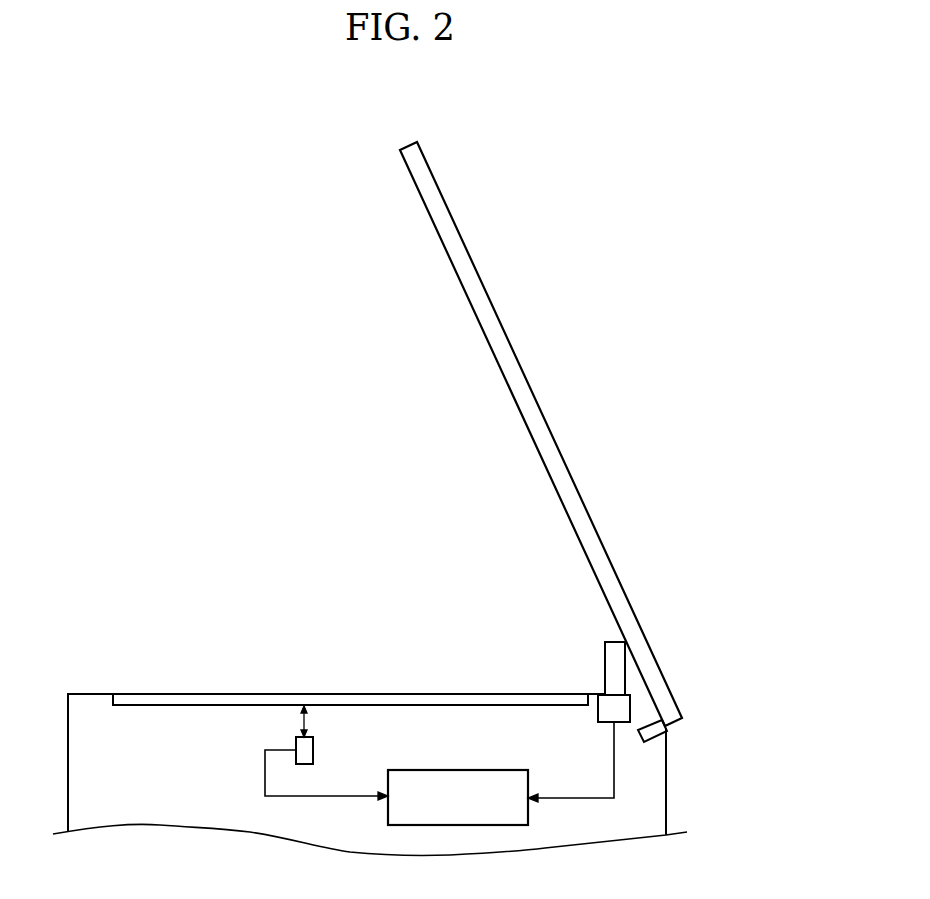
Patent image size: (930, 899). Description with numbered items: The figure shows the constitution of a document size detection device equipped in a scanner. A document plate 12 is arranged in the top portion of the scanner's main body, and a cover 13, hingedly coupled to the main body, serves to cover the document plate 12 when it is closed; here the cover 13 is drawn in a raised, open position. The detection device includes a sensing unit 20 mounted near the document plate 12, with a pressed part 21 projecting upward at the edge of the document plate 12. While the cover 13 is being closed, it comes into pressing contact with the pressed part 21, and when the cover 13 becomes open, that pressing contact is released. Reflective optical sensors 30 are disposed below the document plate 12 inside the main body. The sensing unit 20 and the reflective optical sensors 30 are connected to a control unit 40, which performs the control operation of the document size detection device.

The document plate 12 is at (160, 693).
The cover 13 is at (583, 500).
The sensing unit 20 is at (638, 664).
The pressed part 21 is at (605, 662).
The reflective optical sensors 30 is at (318, 750).
The control unit 40 is at (457, 769).